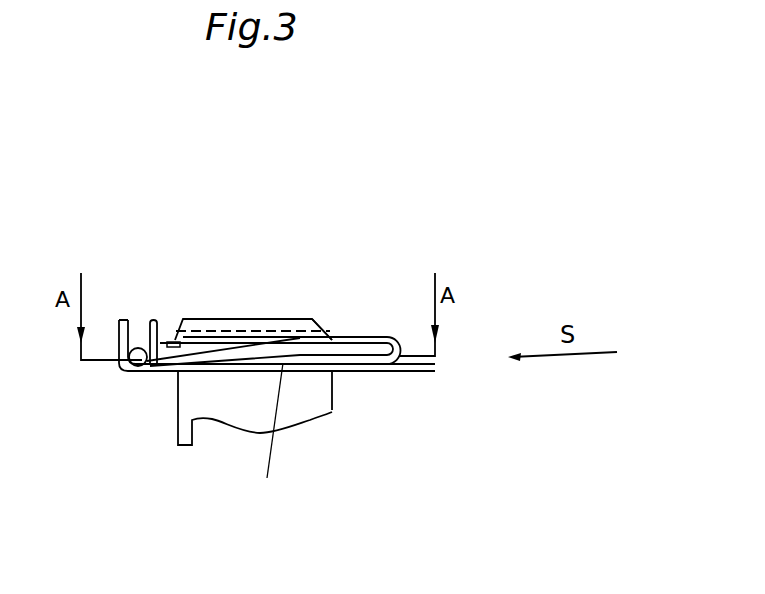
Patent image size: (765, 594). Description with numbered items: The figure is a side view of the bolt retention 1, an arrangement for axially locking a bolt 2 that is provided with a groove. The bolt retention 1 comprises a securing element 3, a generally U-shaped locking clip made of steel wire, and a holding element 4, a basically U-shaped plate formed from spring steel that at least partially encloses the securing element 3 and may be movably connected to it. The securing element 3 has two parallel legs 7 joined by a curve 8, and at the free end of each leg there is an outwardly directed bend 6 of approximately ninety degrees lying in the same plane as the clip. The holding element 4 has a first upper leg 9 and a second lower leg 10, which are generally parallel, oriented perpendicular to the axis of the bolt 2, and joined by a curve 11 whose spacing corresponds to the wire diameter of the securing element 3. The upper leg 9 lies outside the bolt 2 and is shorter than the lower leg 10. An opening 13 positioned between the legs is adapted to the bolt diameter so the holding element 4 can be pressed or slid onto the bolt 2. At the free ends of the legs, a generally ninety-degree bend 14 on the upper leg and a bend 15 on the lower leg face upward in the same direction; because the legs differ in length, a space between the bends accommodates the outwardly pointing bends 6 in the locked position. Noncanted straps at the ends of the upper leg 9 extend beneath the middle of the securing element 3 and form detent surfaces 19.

The bolt retention 1 is at (440, 161).
The bolt 2 is at (333, 410).
The securing element 3 is at (380, 378).
The holding element 4 is at (360, 318).
The outwardly directed bend 6 is at (147, 363).
The legs 7 is at (272, 444).
The curve 8 is at (408, 367).
The upper leg 9 is at (316, 325).
The lower leg 10 is at (168, 372).
The curve 11 is at (400, 325).
The opening 13 is at (245, 310).
The bend 14 is at (158, 305).
The bend 15 is at (123, 305).
The detent surfaces 19 is at (152, 385).